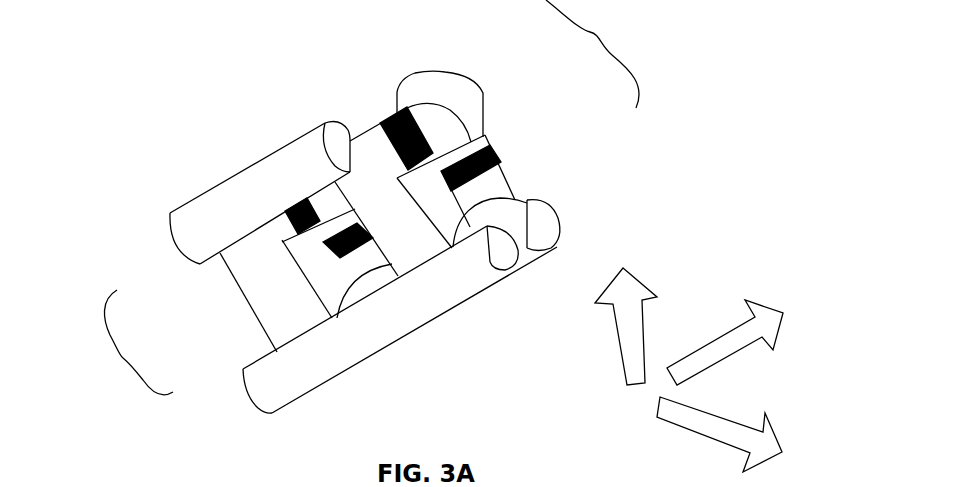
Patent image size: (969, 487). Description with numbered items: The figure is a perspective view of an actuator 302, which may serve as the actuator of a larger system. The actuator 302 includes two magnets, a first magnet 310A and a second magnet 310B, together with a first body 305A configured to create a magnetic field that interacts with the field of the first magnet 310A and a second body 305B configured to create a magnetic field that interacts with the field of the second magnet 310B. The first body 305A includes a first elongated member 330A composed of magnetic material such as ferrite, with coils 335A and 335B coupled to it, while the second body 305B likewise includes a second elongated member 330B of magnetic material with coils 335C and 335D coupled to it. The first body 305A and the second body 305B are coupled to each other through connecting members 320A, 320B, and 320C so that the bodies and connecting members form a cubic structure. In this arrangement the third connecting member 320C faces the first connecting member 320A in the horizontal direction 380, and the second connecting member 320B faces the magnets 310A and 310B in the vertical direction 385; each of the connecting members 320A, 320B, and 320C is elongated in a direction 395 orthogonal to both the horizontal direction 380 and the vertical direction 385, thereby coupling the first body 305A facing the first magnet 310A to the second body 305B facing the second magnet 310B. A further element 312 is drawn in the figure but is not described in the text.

The actuator 302 is at (128, 120).
The first body 305A is at (600, 54).
The second body 305B is at (117, 342).
The first magnet 310A is at (398, 103).
The second magnet 310B is at (330, 197).
The end cap 312 is at (397, 83).
The first connecting member 320A is at (564, 217).
The second connecting member 320B is at (437, 323).
The third connecting member 320C is at (164, 232).
The first elongated member 330A is at (524, 181).
The second elongated member 330B is at (247, 299).
The coil 335A is at (498, 148).
The coil 335B is at (420, 127).
The coil 335C is at (352, 258).
The coil 335D is at (280, 235).
The horizontal direction 380 is at (719, 434).
The vertical direction 385 is at (618, 326).
The direction 395 is at (725, 342).